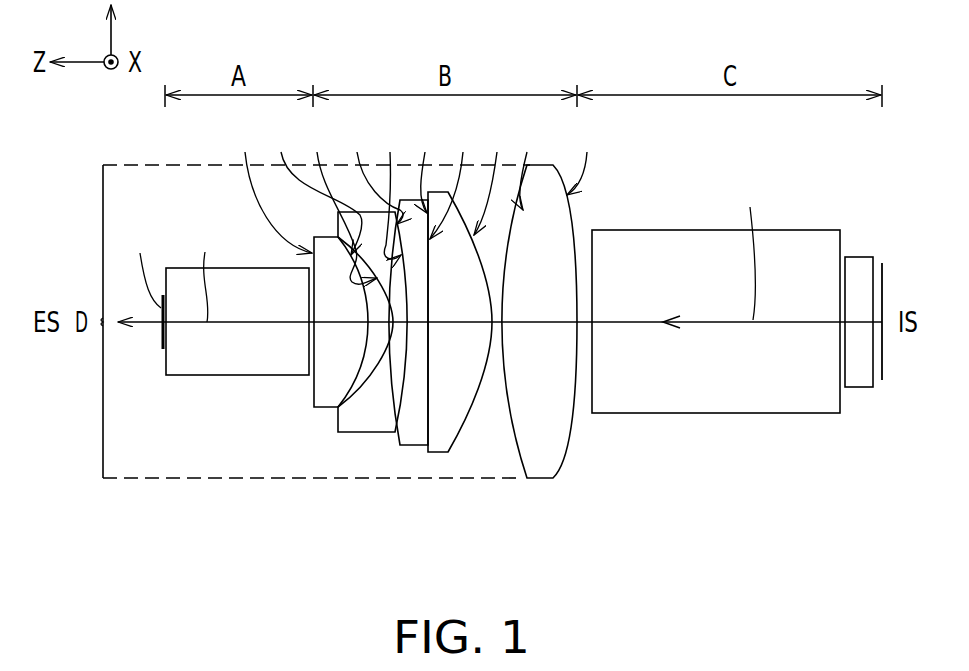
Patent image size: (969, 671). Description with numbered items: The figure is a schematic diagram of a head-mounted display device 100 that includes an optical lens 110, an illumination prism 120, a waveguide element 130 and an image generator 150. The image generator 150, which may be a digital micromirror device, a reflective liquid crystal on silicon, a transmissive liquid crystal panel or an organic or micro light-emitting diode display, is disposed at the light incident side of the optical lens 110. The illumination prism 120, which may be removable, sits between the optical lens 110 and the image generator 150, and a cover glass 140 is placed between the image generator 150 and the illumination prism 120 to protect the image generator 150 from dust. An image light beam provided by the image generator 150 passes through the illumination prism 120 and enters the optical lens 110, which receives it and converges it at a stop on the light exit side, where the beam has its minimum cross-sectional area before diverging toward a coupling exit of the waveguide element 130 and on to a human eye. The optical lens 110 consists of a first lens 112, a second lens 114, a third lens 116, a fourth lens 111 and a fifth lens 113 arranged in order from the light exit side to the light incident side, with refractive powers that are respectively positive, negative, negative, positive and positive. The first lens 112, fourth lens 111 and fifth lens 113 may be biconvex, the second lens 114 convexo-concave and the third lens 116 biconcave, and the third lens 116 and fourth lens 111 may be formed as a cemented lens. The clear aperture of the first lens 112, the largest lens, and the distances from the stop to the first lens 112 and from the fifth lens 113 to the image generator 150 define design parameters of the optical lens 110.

The head-mounted display device 100 is at (903, 589).
The optical lens 110 is at (418, 359).
The fourth lens 111 is at (450, 413).
The first lens 112 is at (320, 398).
The fifth lens 113 is at (535, 347).
The second lens 114 is at (368, 417).
The third lens 116 is at (413, 433).
The illumination prism 120 is at (840, 545).
The waveguide element 130 is at (308, 545).
The cover glass 140 is at (857, 268).
The image generator 150 is at (883, 278).